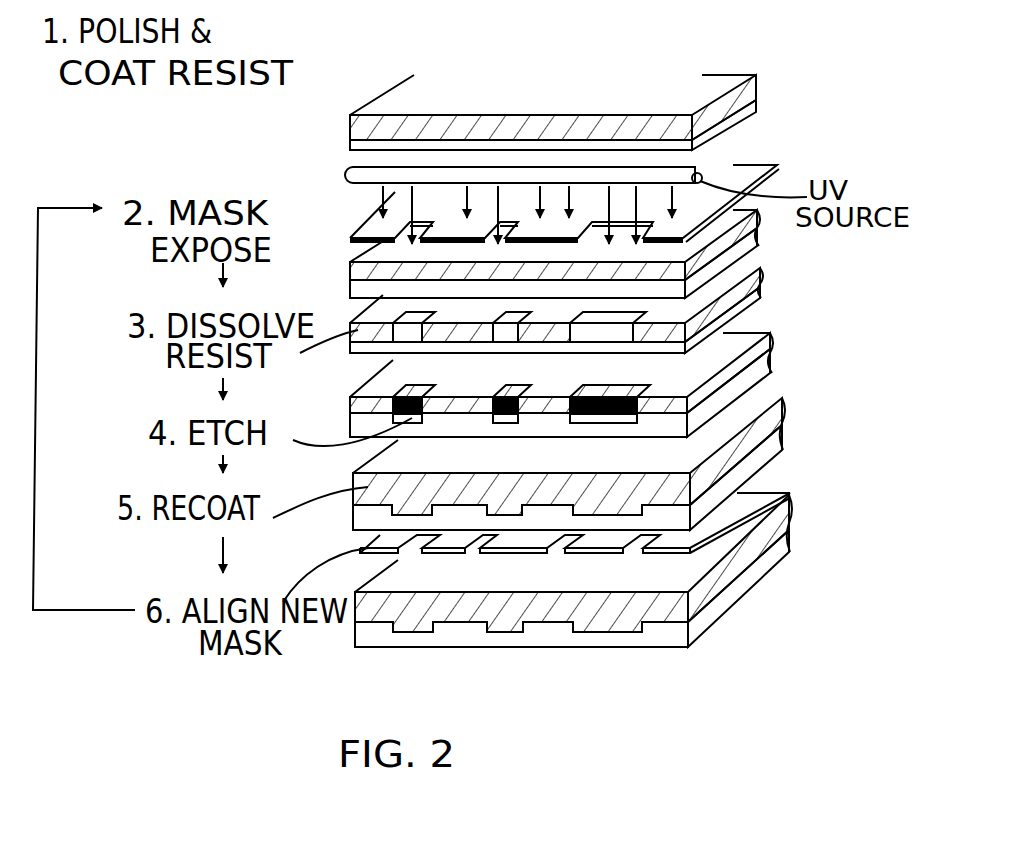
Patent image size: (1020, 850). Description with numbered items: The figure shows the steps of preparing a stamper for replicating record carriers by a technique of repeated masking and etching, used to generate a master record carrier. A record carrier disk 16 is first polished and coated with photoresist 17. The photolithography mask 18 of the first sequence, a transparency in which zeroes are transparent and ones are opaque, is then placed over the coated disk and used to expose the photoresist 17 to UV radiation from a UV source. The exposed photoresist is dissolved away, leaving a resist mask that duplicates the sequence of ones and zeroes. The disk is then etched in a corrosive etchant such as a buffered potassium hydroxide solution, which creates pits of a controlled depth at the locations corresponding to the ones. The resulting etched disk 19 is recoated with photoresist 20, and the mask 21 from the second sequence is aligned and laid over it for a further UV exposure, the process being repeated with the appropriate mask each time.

The record carrier disk 16 is at (740, 118).
The photoresist 17 is at (750, 86).
The photolithography mask 18 is at (700, 207).
The etched disk 19 is at (730, 387).
The photoresist 20 is at (757, 433).
The mask 21 is at (720, 524).